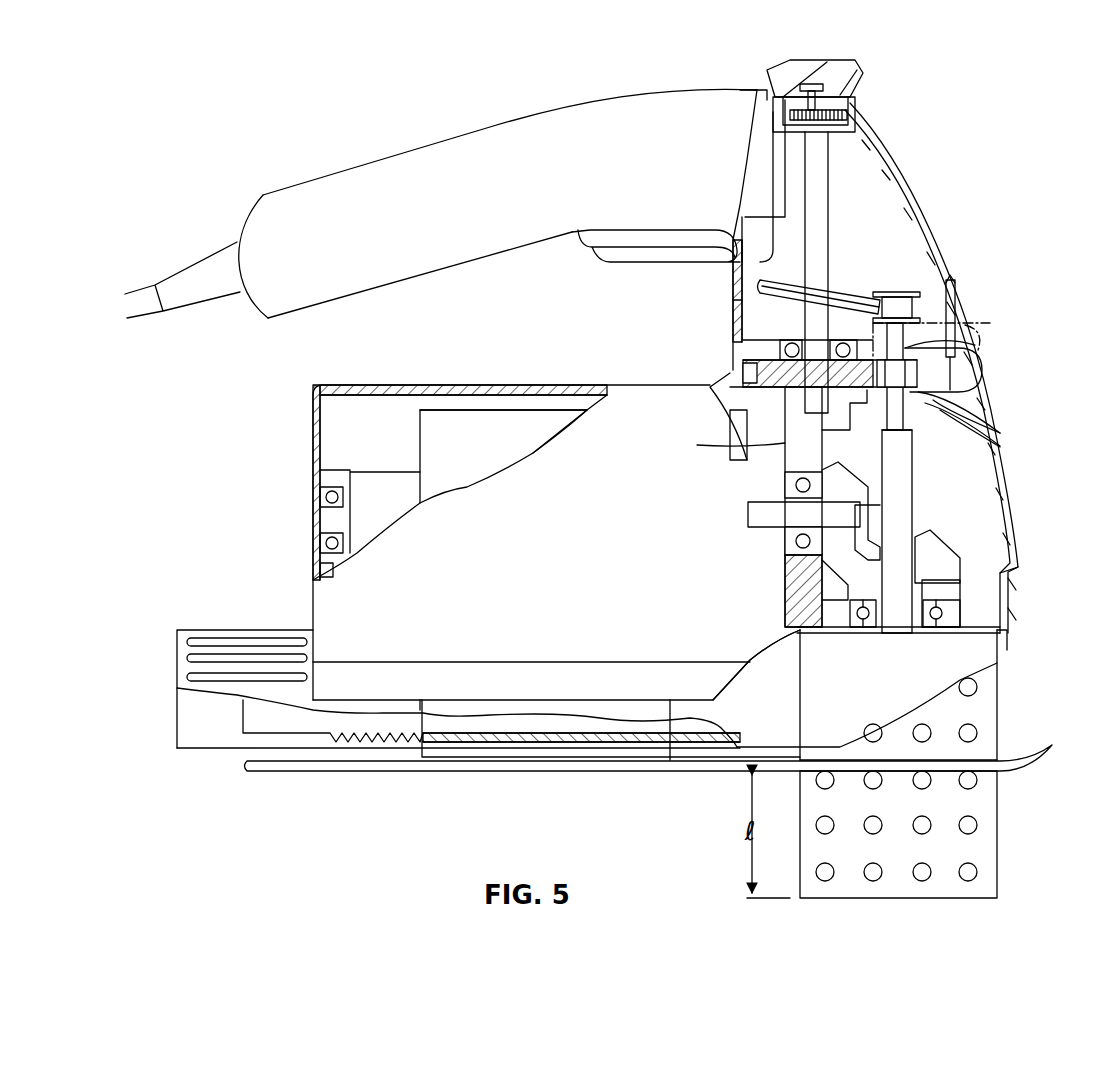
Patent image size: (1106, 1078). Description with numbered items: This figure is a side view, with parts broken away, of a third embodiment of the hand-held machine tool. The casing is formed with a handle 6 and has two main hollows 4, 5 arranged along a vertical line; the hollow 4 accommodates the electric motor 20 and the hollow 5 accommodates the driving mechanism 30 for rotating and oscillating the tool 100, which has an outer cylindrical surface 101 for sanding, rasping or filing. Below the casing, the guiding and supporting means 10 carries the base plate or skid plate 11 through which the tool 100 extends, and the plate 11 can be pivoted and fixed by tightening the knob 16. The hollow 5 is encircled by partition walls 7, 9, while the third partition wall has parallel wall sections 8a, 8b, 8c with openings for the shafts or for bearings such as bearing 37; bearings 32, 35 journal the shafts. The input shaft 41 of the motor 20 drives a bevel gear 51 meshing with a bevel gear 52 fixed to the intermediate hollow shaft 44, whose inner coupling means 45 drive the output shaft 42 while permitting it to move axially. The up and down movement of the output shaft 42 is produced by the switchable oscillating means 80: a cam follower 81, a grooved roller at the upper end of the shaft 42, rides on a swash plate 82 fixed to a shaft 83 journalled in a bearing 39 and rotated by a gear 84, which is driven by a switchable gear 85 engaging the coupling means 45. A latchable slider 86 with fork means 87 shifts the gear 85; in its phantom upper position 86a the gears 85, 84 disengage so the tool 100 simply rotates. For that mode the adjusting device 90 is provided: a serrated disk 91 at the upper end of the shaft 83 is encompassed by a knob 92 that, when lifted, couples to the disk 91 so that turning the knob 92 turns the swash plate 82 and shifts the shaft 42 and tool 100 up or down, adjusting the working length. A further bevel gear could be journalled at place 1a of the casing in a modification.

The place of the casing 1a is at (992, 492).
The hollow 4 is at (350, 386).
The hollow 5 is at (932, 500).
The handle 6 is at (528, 130).
The partition wall 7 is at (790, 478).
The wall section 8a is at (745, 357).
The wall section 8b is at (965, 420).
The wall section 8c is at (747, 400).
The partition wall 9 is at (800, 633).
The guiding and supporting means 10 is at (356, 780).
The base plate or skid plate 11 is at (565, 772).
The knob 16 is at (243, 630).
The electric motor 20 is at (447, 430).
The driving mechanism 30 is at (968, 516).
The bearing 32 is at (760, 515).
The bearing 35 is at (850, 633).
The bearing 37 is at (905, 440).
The bearing 39 is at (745, 322).
The input shaft 41 is at (773, 510).
The output shaft 42 is at (935, 536).
The intermediate hollow shaft 44 is at (970, 600).
The coupling means 45 is at (985, 662).
The bevel gear 51 is at (813, 610).
The bevel gear 52 is at (1012, 570).
The switchable oscillating means 80 is at (873, 252).
The cam follower 81 is at (897, 300).
The swash plate 82 is at (843, 300).
The shaft 83 is at (818, 212).
The gear 84 is at (742, 368).
The switchable gear 85 is at (930, 400).
The latchable slider 86 is at (967, 372).
The upper position 86a is at (982, 318).
The fork means 87 is at (965, 348).
The adjusting device 90 is at (854, 104).
The disk 91 is at (820, 125).
The knob 92 is at (832, 70).
The tool 100 is at (1004, 862).
The outer cylindrical surface 101 is at (1000, 794).